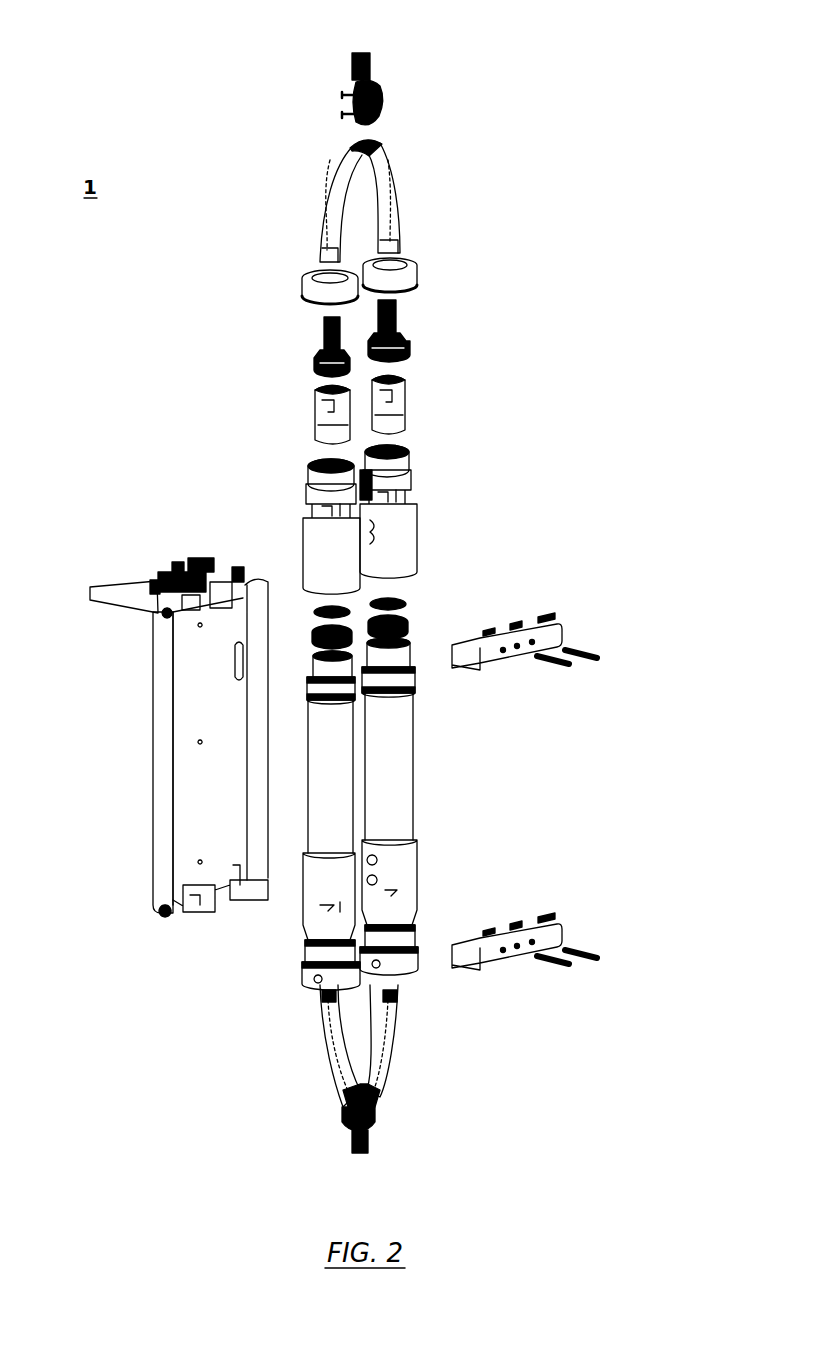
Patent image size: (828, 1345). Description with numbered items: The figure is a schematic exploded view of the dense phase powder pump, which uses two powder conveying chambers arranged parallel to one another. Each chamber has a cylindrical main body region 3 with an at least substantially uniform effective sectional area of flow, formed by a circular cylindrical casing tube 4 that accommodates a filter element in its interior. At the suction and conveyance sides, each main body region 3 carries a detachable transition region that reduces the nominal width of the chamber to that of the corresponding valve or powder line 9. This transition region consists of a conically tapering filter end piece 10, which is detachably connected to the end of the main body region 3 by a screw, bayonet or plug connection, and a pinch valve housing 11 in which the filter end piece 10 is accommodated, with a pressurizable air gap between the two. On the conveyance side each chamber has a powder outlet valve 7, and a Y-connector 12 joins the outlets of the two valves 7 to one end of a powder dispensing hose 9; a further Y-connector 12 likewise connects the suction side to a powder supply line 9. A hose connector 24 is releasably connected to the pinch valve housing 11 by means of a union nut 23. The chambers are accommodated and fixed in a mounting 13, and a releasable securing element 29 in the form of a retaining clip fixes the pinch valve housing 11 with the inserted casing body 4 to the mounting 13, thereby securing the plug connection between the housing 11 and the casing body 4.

The main body region 3 is at (468, 745).
The casing tube 4 is at (372, 750).
The powder outlet valve 7 is at (323, 413).
The powder line 9 is at (347, 68).
The filter end piece 10 is at (338, 613).
The pinch valve housing 11 is at (340, 545).
The Y-connector 12 is at (365, 98).
The mounting 13 is at (197, 775).
The union nut 23 is at (333, 292).
The hose connector 24 is at (320, 352).
The releasable securing element 29 is at (540, 636).